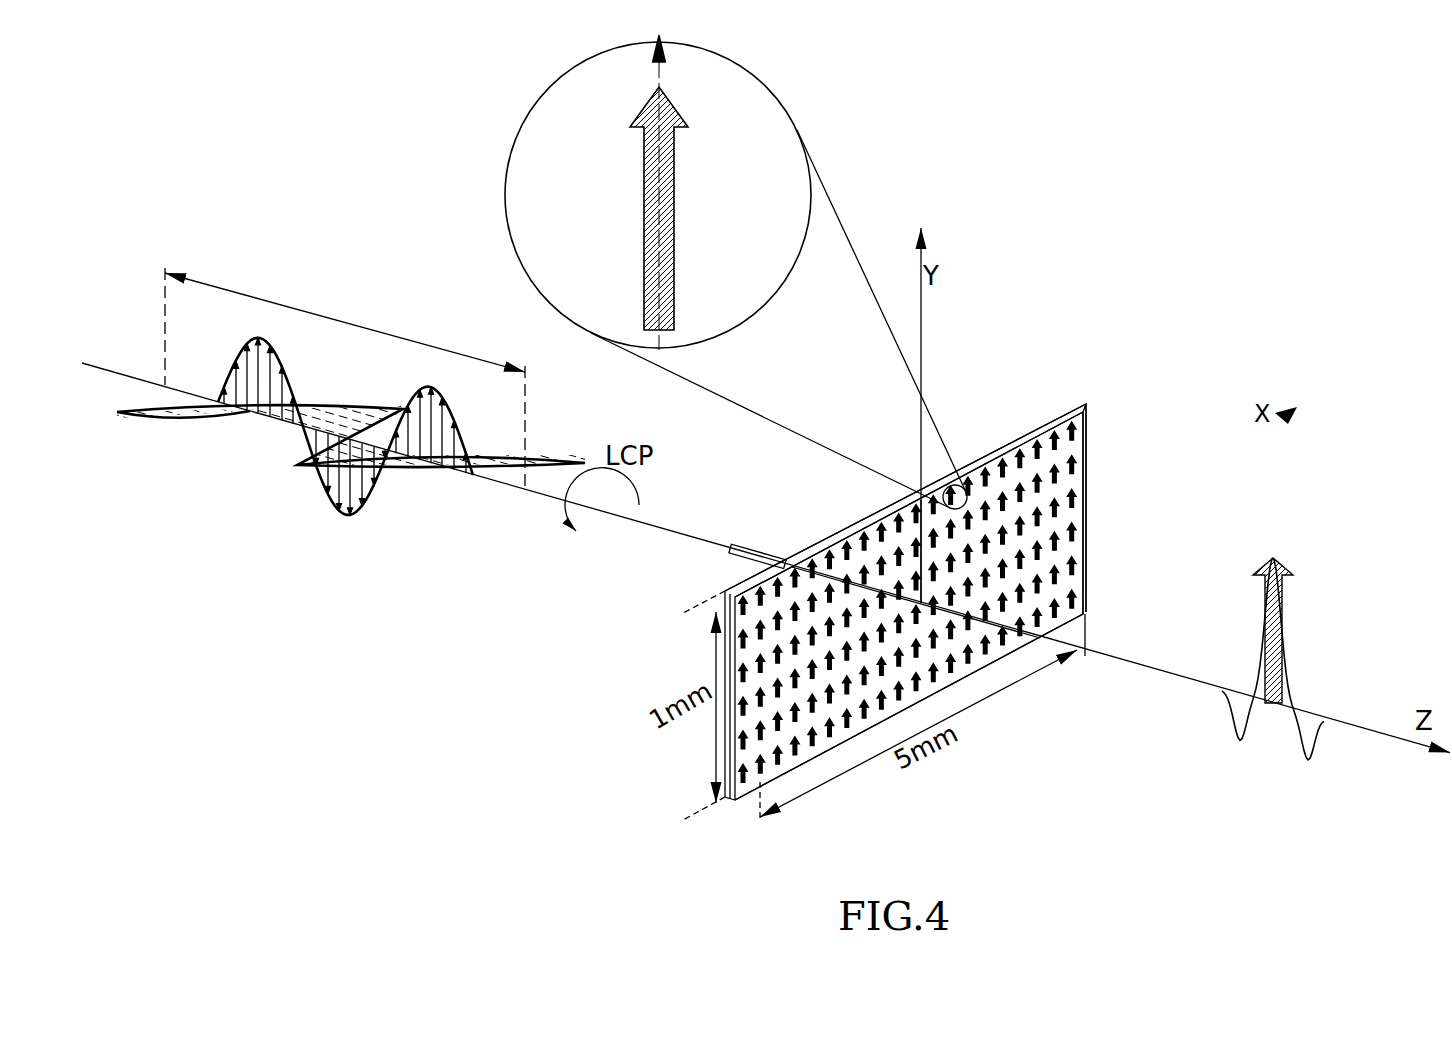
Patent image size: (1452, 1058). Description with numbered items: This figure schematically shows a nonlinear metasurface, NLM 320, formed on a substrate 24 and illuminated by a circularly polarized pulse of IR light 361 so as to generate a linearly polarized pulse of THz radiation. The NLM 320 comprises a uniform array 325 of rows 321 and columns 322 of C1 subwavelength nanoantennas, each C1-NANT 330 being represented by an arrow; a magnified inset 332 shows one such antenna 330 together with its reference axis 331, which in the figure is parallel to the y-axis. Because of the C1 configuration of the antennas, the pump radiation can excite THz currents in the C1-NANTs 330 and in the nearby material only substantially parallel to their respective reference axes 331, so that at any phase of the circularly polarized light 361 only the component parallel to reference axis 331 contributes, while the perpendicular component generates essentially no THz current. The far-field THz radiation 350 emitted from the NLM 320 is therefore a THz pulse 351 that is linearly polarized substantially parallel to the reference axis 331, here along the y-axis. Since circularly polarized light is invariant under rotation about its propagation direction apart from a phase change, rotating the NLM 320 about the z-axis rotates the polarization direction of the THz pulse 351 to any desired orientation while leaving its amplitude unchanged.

The substrate 24 is at (790, 772).
The NLM 320 is at (862, 512).
The rows 321 is at (1084, 483).
The columns 322 is at (1053, 424).
The array 325 is at (1180, 428).
The C1-NANT 330 is at (677, 183).
The reference axis 331 is at (662, 68).
The magnified inset 332 is at (572, 72).
The output pulse 350 is at (1300, 633).
The THz pulse 351 is at (1278, 605).
The circularly polarized pulse of IR light 361 is at (358, 562).